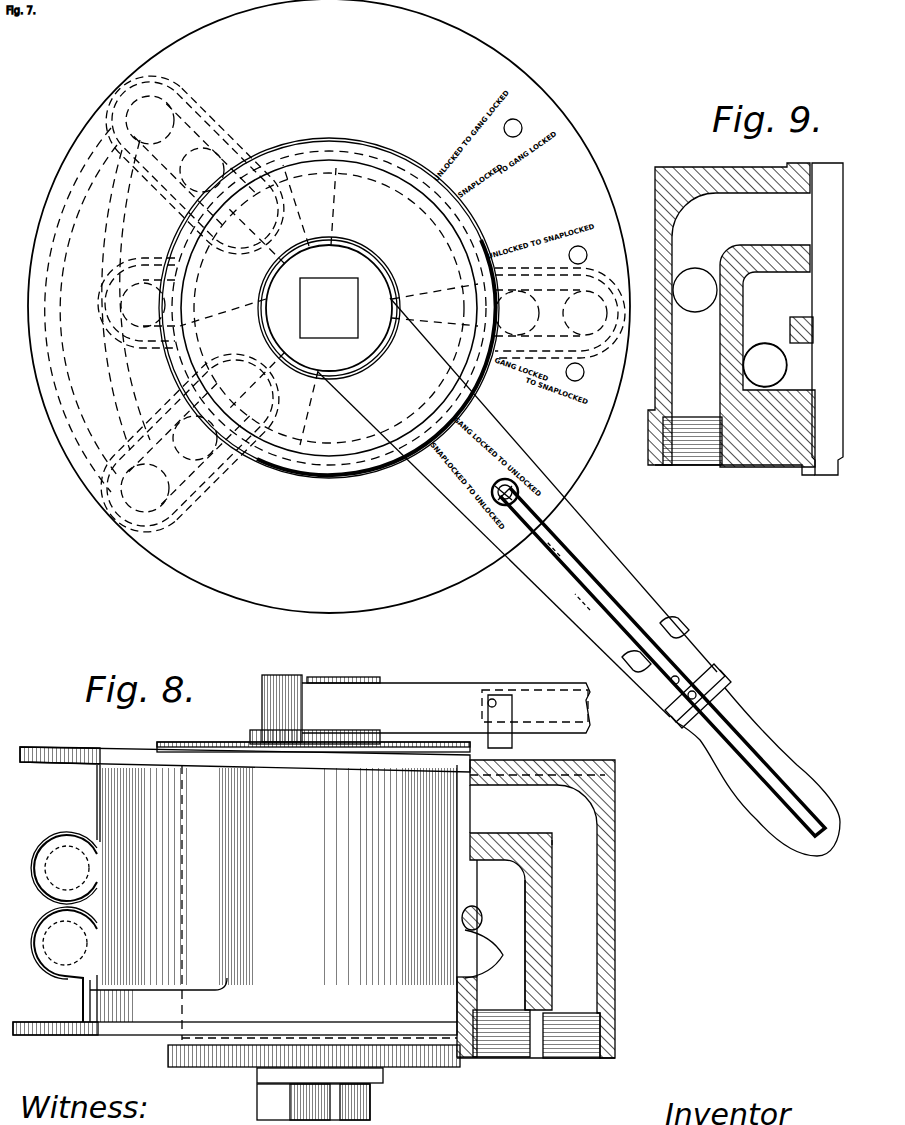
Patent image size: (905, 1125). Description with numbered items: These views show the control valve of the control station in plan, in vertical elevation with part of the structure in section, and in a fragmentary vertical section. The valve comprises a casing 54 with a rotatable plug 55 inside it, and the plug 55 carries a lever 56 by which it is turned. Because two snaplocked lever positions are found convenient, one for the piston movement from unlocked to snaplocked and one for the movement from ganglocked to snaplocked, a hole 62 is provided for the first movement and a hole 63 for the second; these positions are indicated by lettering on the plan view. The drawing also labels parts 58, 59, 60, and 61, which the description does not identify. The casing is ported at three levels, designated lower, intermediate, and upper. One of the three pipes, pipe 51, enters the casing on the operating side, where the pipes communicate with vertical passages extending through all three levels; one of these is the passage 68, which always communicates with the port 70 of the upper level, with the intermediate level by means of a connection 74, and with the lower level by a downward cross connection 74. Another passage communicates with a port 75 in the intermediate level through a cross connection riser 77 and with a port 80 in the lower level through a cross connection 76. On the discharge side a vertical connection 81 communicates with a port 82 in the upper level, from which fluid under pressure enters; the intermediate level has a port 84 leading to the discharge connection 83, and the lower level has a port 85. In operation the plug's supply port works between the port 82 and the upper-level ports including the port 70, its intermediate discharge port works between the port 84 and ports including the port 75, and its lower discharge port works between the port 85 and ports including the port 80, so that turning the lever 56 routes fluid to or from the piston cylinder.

In FIG. 7, the pipe 51 is at (765, 742).
In FIG. 9, the casing 54 is at (692, 167).
In FIG. 8, the casing 54 is at (600, 888).
In FIG. 8, the rotatable plug 55 is at (258, 830).
In FIG. 7, the lever 56 is at (597, 560).
In FIG. 8, the lever 56 is at (440, 690).
In FIG. 7, the rod 58 is at (615, 612).
In FIG. 8, the rod 58 is at (545, 693).
In FIG. 8, the pin 59 is at (512, 744).
In FIG. 7, the pivot pin 60 is at (520, 494).
In FIG. 8, the pivot pin 60 is at (540, 818).
In FIG. 7, the hole 61 is at (522, 124).
In FIG. 7, the hole 62 is at (586, 250).
In FIG. 7, the hole 63 is at (584, 373).
In FIG. 9, the passage 68 is at (687, 390).
In FIG. 9, the port 70 is at (800, 210).
In FIG. 7, the connection 74 is at (95, 458).
In FIG. 9, the connection 74 is at (686, 286).
In FIG. 8, the connection 74 is at (65, 862).
In FIG. 9, the port 75 is at (800, 292).
In FIG. 7, the cross connection 76 is at (100, 166).
In FIG. 9, the cross connection 76 is at (765, 378).
In FIG. 8, the cross connection 76 is at (63, 947).
In FIG. 9, the cross connection riser 77 is at (770, 320).
In FIG. 9, the port 80 is at (808, 366).
In FIG. 8, the vertical connection 81 is at (590, 945).
In FIG. 8, the port 82 is at (488, 809).
In FIG. 8, the discharge connection 83 is at (520, 983).
In FIG. 8, the port 84 is at (497, 935).
In FIG. 8, the port 85 is at (480, 981).